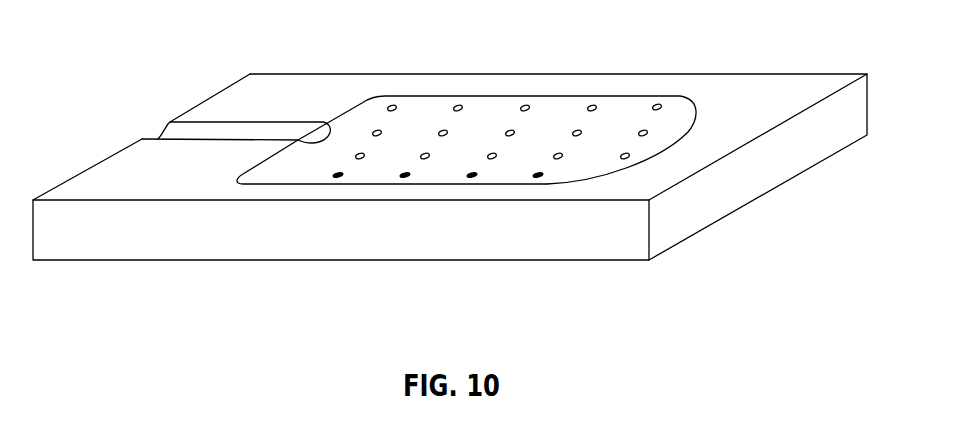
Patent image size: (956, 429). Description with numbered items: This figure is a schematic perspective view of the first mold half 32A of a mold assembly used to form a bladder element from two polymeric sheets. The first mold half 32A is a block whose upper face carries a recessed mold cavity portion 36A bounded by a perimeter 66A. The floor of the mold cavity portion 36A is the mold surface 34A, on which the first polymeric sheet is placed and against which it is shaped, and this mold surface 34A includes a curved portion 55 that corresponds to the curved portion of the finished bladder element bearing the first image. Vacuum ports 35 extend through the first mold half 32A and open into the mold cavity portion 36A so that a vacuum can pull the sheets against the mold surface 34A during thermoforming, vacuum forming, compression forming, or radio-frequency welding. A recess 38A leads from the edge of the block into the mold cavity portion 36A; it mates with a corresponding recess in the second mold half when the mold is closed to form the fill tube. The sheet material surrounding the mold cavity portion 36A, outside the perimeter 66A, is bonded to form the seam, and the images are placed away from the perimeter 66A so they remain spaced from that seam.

The first mold half 32A is at (558, 238).
The mold surface 34A is at (352, 166).
The vacuum ports 35 is at (577, 131).
The mold cavity portion 36A is at (417, 107).
The recess 38A is at (185, 133).
The curved portion 55 is at (427, 170).
The perimeter 66A is at (280, 184).